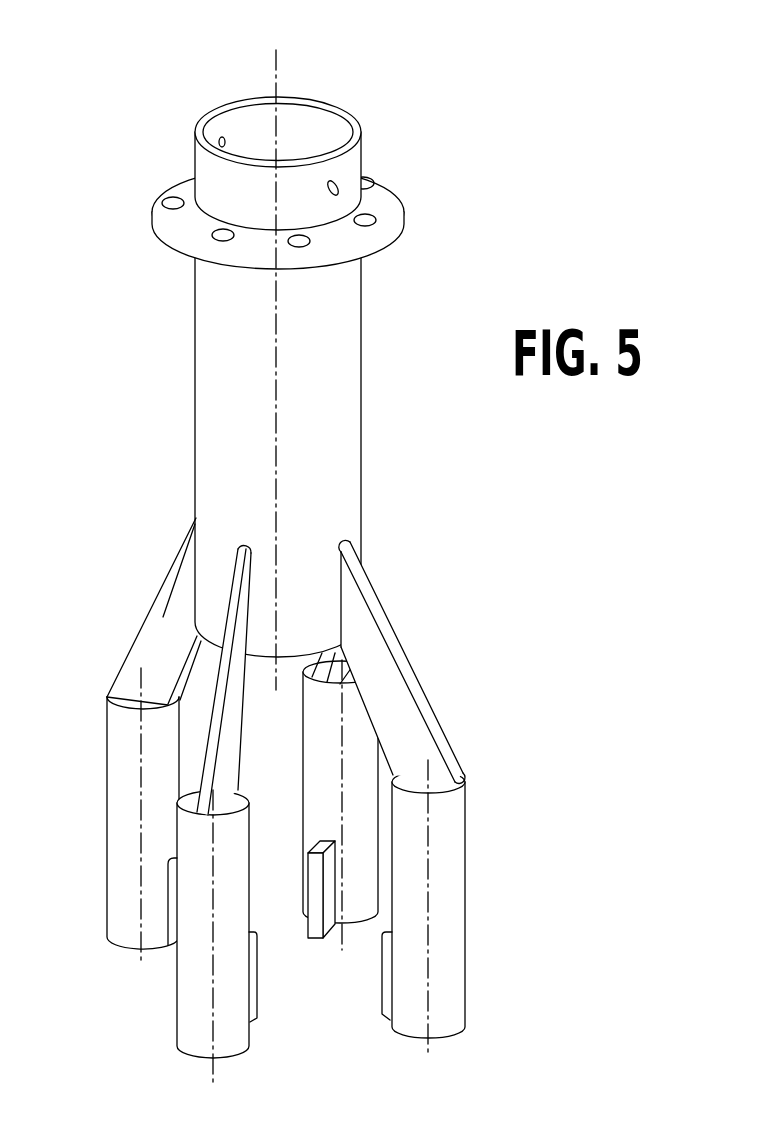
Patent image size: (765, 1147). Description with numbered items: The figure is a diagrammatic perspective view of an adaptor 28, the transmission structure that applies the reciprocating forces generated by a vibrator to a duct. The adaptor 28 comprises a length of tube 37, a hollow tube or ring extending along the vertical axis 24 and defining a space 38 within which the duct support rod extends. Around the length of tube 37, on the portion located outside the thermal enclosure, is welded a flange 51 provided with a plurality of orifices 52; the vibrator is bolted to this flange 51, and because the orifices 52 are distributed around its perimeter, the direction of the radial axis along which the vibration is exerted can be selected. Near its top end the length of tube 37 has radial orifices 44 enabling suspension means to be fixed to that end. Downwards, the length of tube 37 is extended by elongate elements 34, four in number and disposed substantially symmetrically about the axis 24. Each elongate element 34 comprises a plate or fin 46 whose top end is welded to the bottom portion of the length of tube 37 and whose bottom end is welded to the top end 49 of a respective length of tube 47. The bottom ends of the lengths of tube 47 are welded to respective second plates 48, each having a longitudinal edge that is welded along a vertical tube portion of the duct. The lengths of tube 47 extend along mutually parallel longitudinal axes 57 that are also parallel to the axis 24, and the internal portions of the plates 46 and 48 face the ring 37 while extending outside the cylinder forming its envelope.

The axis 24 is at (276, 65).
The adaptor 28 is at (138, 478).
The elongate elements 34 is at (88, 715).
The length of tube 37 is at (210, 323).
The space 38 is at (332, 135).
The radial orifices 44 is at (337, 182).
The plate 46 is at (220, 670).
The length of tube 47 is at (113, 806).
The plates 48 is at (308, 897).
The top end 49 is at (455, 770).
The flange 51 is at (383, 193).
The orifices 52 is at (370, 220).
The longitudinal axes 57 is at (139, 958).